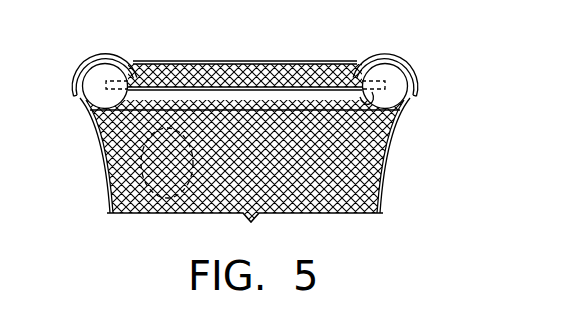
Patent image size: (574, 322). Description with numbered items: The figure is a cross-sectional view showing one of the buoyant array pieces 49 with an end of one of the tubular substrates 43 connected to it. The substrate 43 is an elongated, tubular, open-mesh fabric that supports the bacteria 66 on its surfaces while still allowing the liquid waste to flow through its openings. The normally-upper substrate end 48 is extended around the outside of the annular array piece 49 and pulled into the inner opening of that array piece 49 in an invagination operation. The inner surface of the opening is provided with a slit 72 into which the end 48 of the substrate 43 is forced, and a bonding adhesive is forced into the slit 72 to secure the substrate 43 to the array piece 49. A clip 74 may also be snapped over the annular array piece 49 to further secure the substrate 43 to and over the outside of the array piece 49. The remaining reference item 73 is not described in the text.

The elongated fixed-film substrate 43 is at (381, 180).
The upper substrate end 48 is at (388, 122).
The buoyant array piece 49 is at (393, 77).
The bacteria 66 is at (143, 167).
The slit 72 is at (105, 80).
The wire loop 73 is at (360, 97).
The clip 74 is at (103, 53).